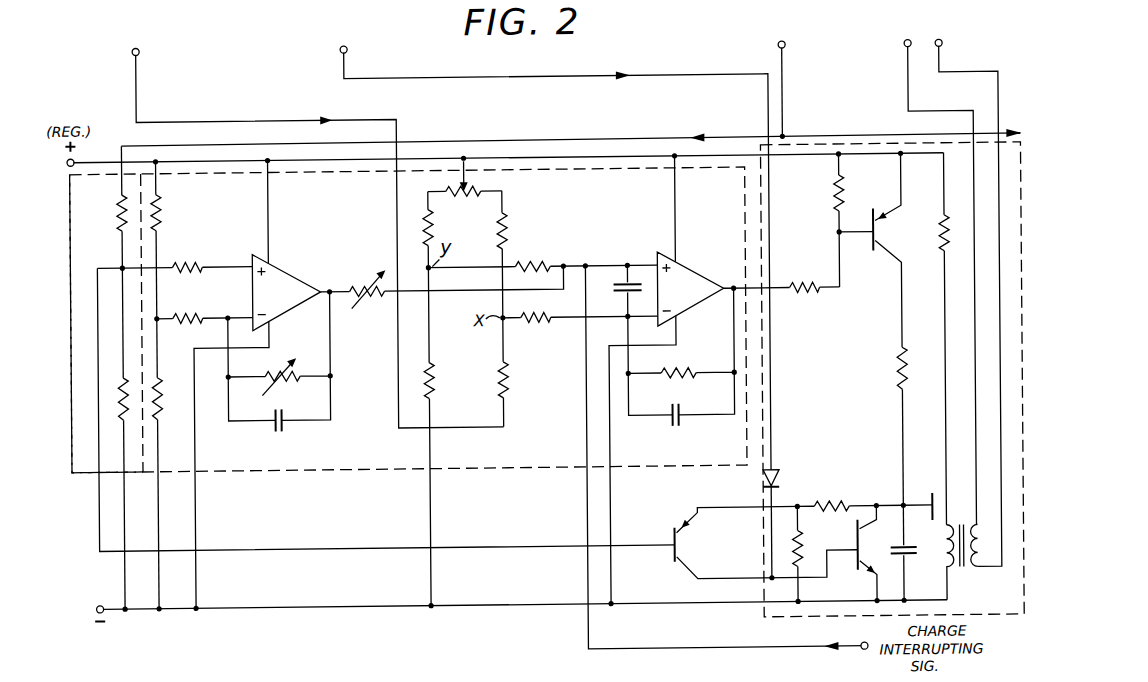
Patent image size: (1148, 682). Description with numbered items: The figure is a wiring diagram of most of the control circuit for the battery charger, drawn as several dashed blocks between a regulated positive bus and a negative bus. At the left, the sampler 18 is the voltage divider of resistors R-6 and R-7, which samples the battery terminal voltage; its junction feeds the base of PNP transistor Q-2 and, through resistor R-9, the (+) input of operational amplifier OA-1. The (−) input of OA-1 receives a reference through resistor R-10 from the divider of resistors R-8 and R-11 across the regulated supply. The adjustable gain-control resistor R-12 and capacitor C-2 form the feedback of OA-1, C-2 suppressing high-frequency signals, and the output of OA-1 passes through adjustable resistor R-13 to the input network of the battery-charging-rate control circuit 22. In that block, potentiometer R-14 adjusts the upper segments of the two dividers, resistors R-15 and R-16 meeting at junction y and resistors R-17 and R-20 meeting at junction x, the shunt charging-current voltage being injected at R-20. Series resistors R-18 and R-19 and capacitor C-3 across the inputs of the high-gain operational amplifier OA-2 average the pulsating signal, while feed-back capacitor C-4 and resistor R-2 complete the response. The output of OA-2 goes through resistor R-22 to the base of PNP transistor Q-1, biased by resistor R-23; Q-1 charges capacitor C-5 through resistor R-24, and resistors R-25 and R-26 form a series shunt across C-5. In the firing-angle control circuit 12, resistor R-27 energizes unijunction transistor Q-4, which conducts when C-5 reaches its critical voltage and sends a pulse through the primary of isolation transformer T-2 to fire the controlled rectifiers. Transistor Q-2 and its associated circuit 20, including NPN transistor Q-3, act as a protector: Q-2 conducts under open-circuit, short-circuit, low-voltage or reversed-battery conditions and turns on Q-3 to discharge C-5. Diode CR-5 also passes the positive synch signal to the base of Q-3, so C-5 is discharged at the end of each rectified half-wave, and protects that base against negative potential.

The firing-angle control circuit 12 is at (755, 618).
The sampler 18 is at (84, 478).
The output transistor stage 20 is at (695, 494).
The battery-charging-rate control circuit 22 is at (383, 482).
The resistor R-6 is at (118, 197).
The resistor R-7 is at (141, 386).
The resistor R-8 is at (166, 212).
The resistor R-9 is at (172, 262).
The resistor R-10 is at (173, 313).
The resistor R-11 is at (181, 372).
The adjustable gain-control resistor R-12 is at (270, 370).
The adjustable resistor R-13 is at (353, 283).
The potentiometer R-14 is at (483, 188).
The resistor R-15 is at (437, 223).
The resistor R-16 is at (436, 373).
The resistor R-17 is at (511, 223).
The resistor R-18 is at (522, 263).
The resistor R-19 is at (533, 325).
The resistor R-20 is at (509, 384).
The SCR-protective resistor R-2 is at (675, 372).
The resistor R-22 is at (797, 293).
The resistor R-23 is at (836, 201).
The resistor R-24 is at (898, 377).
The resistor R-25 is at (818, 503).
The resistor R-26 is at (801, 547).
The resistor R-27 is at (940, 259).
The capacitor C-2 is at (263, 433).
The capacitor C-3 is at (612, 288).
The feed-back capacitor C-4 is at (670, 432).
The capacitor C-5 is at (919, 558).
The operational amplifier OA-1 is at (280, 259).
The high-gain operational amplifier OA-2 is at (690, 263).
The PNP transistor Q-1 is at (878, 236).
The PNP transistor Q-2 is at (665, 530).
The NPN transistor Q-3 is at (850, 566).
The unijunction transistor Q-4 is at (931, 496).
The diode CR-5 is at (780, 479).
The isolation transformer T-2 is at (965, 576).